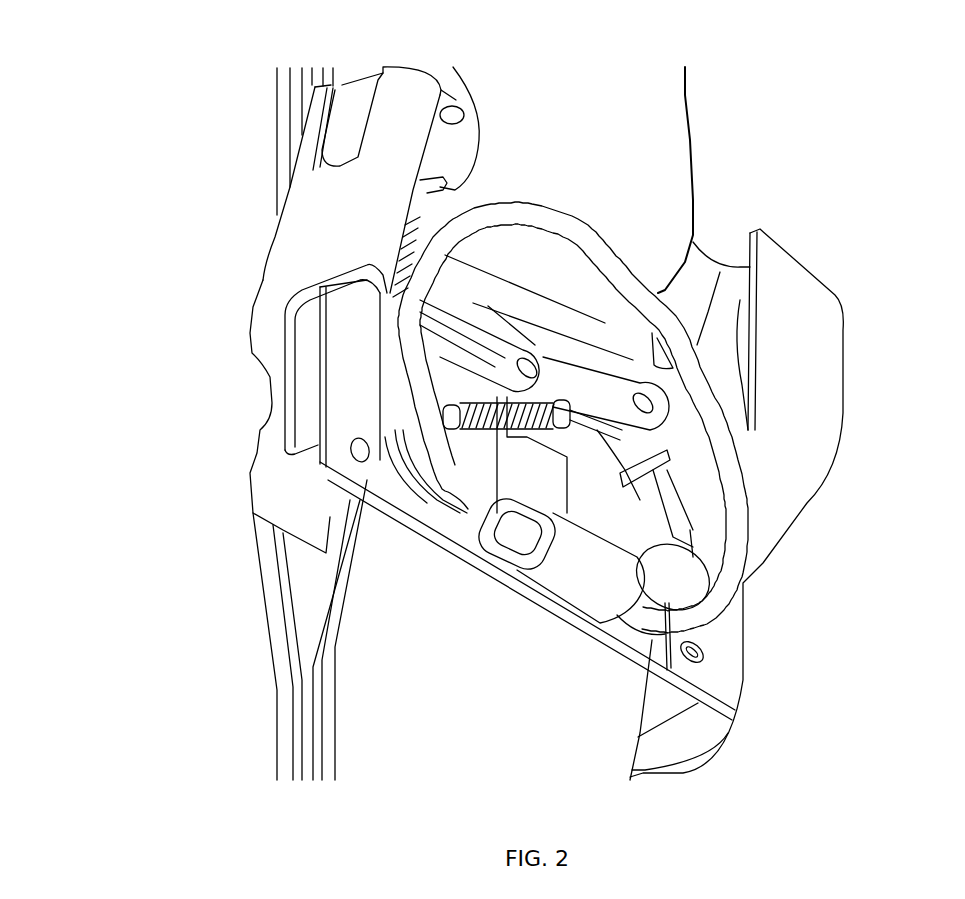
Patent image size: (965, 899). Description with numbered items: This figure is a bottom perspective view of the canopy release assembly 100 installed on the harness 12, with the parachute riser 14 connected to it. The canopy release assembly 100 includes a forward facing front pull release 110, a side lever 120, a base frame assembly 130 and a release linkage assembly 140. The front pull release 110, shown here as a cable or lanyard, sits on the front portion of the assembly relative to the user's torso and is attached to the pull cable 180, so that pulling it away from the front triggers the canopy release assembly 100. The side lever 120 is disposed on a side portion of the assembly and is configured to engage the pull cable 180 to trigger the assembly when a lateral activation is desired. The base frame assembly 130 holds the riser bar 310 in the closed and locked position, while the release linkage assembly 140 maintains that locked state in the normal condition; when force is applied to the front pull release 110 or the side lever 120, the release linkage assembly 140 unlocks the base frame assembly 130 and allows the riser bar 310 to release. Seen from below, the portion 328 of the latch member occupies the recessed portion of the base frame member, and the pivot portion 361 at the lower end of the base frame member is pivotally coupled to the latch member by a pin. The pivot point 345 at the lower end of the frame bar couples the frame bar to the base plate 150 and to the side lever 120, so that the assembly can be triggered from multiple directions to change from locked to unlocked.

The harness 12 is at (303, 710).
The parachute riser 14 is at (653, 100).
The canopy release assembly 100 is at (775, 663).
The front pull release 110 is at (627, 260).
The side lever 120 is at (823, 320).
The base frame assembly 130 is at (268, 491).
The release linkage assembly 140 is at (450, 378).
The base plate 150 is at (540, 607).
The pull cable 180 is at (683, 503).
The riser bar 310 is at (453, 147).
The portion of the latch member 328 is at (353, 353).
The pivot point 345 is at (703, 665).
The pivot portion 361 is at (362, 452).